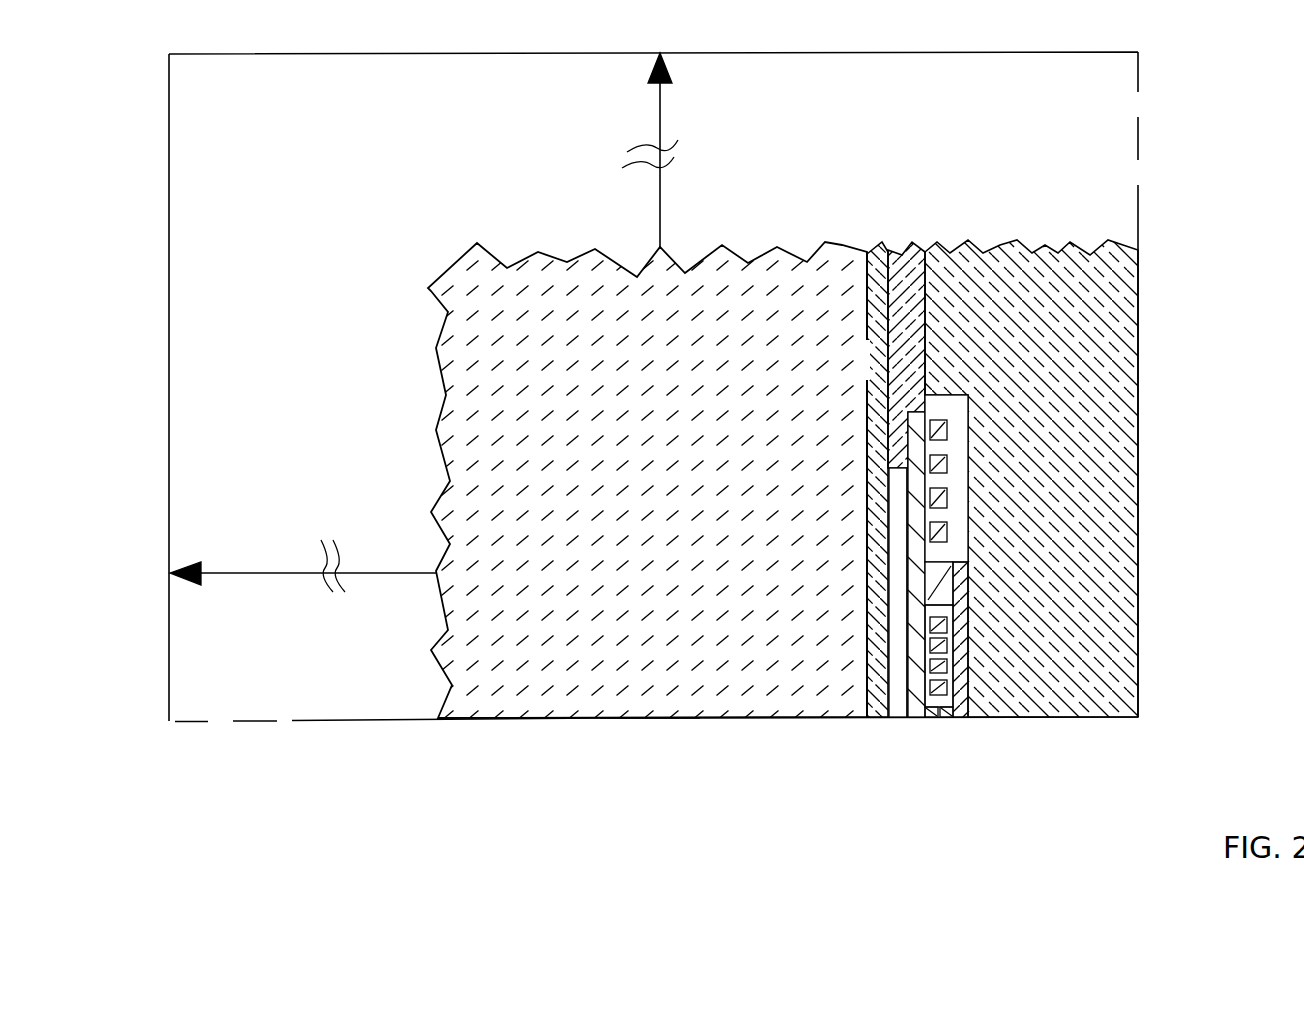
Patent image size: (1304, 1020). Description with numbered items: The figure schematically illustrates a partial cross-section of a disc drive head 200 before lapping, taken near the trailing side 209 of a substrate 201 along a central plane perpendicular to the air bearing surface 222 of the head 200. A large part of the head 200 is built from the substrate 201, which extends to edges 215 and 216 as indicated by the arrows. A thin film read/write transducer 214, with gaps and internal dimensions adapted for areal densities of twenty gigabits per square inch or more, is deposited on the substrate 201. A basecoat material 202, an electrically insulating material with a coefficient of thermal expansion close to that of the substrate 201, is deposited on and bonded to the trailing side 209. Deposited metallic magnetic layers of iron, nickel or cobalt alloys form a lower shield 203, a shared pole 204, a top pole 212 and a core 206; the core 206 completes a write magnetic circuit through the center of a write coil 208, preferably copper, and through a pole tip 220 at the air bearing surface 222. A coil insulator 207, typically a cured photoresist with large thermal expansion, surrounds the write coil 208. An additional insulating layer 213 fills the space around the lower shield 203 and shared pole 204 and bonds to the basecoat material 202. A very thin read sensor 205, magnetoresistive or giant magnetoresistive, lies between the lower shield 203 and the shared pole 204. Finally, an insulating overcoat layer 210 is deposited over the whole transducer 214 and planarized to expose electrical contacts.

The head 200 is at (1213, 181).
The substrate 201 is at (655, 501).
The basecoat material 202 is at (877, 252).
The lower shield 203 is at (898, 719).
The shared pole 204 is at (918, 720).
The read sensor 205 is at (905, 748).
The core 206 is at (945, 587).
The coil insulator 207 is at (953, 408).
The write coil 208 is at (940, 505).
The trailing side 209 is at (868, 638).
The overcoat layer 210 is at (1018, 242).
The top pole 212 is at (962, 722).
The insulating layer 213 is at (902, 253).
The thin film read/write transducer 214 is at (860, 362).
The edge 215 is at (658, 80).
The edge 216 is at (200, 573).
The pole tip 220 is at (941, 742).
The air bearing surface 222 is at (645, 720).